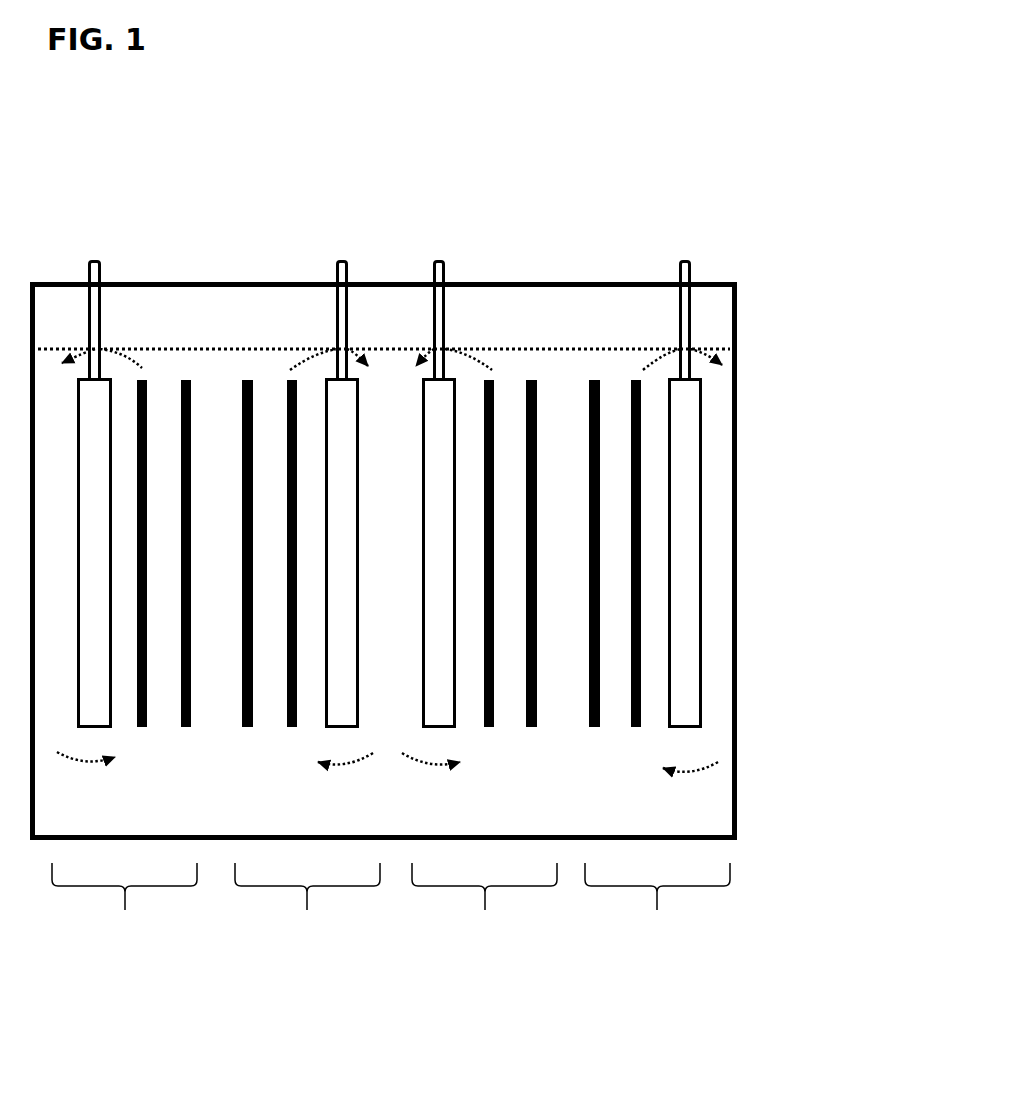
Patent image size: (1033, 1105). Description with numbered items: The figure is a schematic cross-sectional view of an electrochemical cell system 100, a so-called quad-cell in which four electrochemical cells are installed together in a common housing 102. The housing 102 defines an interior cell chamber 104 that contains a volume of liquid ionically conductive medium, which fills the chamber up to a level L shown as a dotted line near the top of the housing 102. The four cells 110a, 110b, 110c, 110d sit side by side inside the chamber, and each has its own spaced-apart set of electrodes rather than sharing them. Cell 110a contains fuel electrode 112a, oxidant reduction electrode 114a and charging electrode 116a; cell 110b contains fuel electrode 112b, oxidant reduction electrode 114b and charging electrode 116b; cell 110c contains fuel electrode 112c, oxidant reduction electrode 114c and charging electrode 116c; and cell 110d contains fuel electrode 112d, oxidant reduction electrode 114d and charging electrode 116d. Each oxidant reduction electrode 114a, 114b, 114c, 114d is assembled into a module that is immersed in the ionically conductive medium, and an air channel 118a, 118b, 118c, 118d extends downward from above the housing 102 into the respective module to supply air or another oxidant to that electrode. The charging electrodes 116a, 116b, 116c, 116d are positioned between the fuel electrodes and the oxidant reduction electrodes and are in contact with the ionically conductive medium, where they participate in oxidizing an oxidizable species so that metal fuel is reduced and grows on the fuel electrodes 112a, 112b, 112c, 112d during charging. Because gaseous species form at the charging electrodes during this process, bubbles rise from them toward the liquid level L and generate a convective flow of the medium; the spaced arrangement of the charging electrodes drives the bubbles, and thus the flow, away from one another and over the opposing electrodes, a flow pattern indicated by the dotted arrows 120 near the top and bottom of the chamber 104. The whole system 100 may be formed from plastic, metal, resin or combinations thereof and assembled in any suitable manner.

The electrochemical cell system 100 is at (390, 180).
The housing 102 is at (738, 563).
The cell chamber 104 is at (703, 805).
The cell 110a is at (124, 904).
The cell 110b is at (307, 904).
The cell 110c is at (484, 904).
The cell 110d is at (657, 904).
The fuel electrode 112a is at (186, 578).
The fuel electrode 112b is at (247, 579).
The fuel electrode 112c is at (531, 578).
The fuel electrode 112d is at (594, 579).
The oxidant reduction electrode 114a is at (95, 553).
The oxidant reduction electrode 114b is at (342, 553).
The oxidant reduction electrode 114c is at (439, 553).
The oxidant reduction electrode 114d is at (685, 553).
The charging electrode 116a is at (141, 578).
The charging electrode 116b is at (291, 579).
The charging electrode 116c is at (488, 578).
The charging electrode 116d is at (635, 579).
The air channel 118a is at (107, 320).
The air channel 118b is at (327, 320).
The air channel 118c is at (457, 320).
The air channel 118d is at (675, 320).
The arrows 120 is at (377, 584).
The level L is at (703, 343).